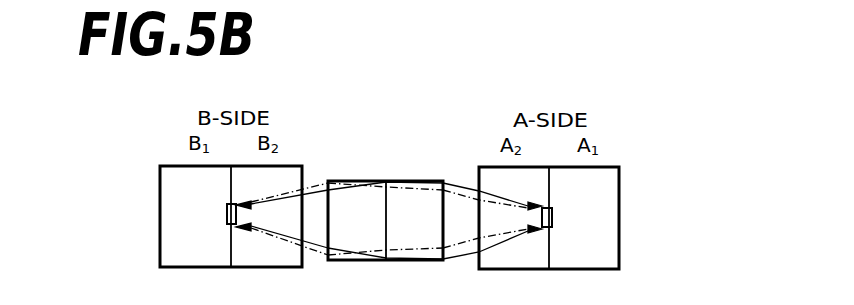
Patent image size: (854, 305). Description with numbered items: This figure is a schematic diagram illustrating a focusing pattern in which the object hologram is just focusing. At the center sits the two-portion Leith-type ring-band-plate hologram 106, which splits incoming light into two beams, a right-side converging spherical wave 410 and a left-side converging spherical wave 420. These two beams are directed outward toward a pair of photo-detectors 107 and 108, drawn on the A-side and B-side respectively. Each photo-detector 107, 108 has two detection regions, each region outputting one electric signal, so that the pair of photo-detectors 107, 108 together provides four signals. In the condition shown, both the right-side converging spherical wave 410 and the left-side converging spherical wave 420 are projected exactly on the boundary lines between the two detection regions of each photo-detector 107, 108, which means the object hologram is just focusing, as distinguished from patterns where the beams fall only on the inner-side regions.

The photo-detector 108 is at (174, 197).
The photo-detector 107 is at (598, 195).
The two-portion Leith-type ring-band-plate hologram 106 is at (365, 183).
The left-side converging spherical wave 420 is at (313, 208).
The right-side converging spherical wave 410 is at (462, 207).